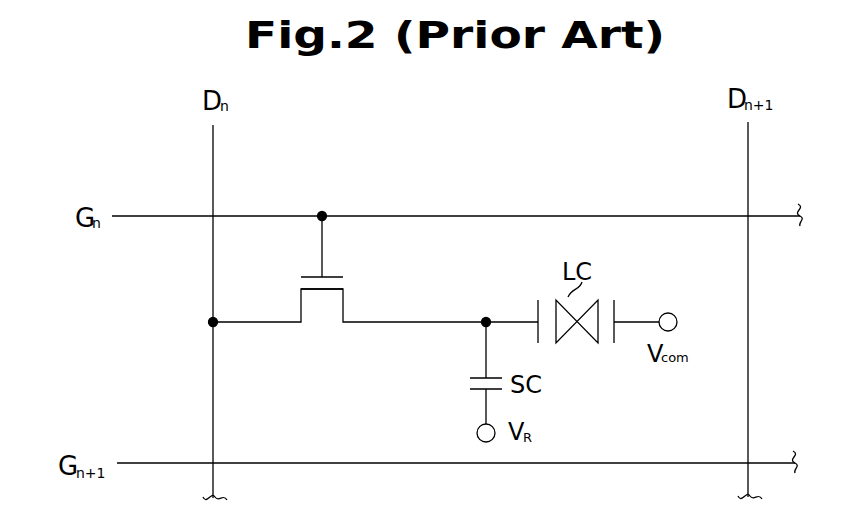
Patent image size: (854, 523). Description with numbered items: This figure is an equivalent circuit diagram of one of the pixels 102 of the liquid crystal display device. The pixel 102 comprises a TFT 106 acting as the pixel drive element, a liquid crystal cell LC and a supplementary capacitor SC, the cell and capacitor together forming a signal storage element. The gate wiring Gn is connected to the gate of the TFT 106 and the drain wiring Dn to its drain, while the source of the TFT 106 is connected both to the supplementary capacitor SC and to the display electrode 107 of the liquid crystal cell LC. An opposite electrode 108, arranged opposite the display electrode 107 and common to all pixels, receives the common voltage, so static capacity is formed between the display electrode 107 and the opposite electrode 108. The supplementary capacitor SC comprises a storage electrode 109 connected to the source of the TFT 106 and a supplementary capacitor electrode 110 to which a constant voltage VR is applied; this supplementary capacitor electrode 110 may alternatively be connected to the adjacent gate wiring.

The pixel 102 is at (480, 196).
The TFT 106 is at (300, 325).
The display electrode 107 is at (537, 312).
The opposite electrode 108 is at (617, 313).
The storage electrode 109 is at (477, 376).
The supplementary capacitor electrode 110 is at (483, 412).